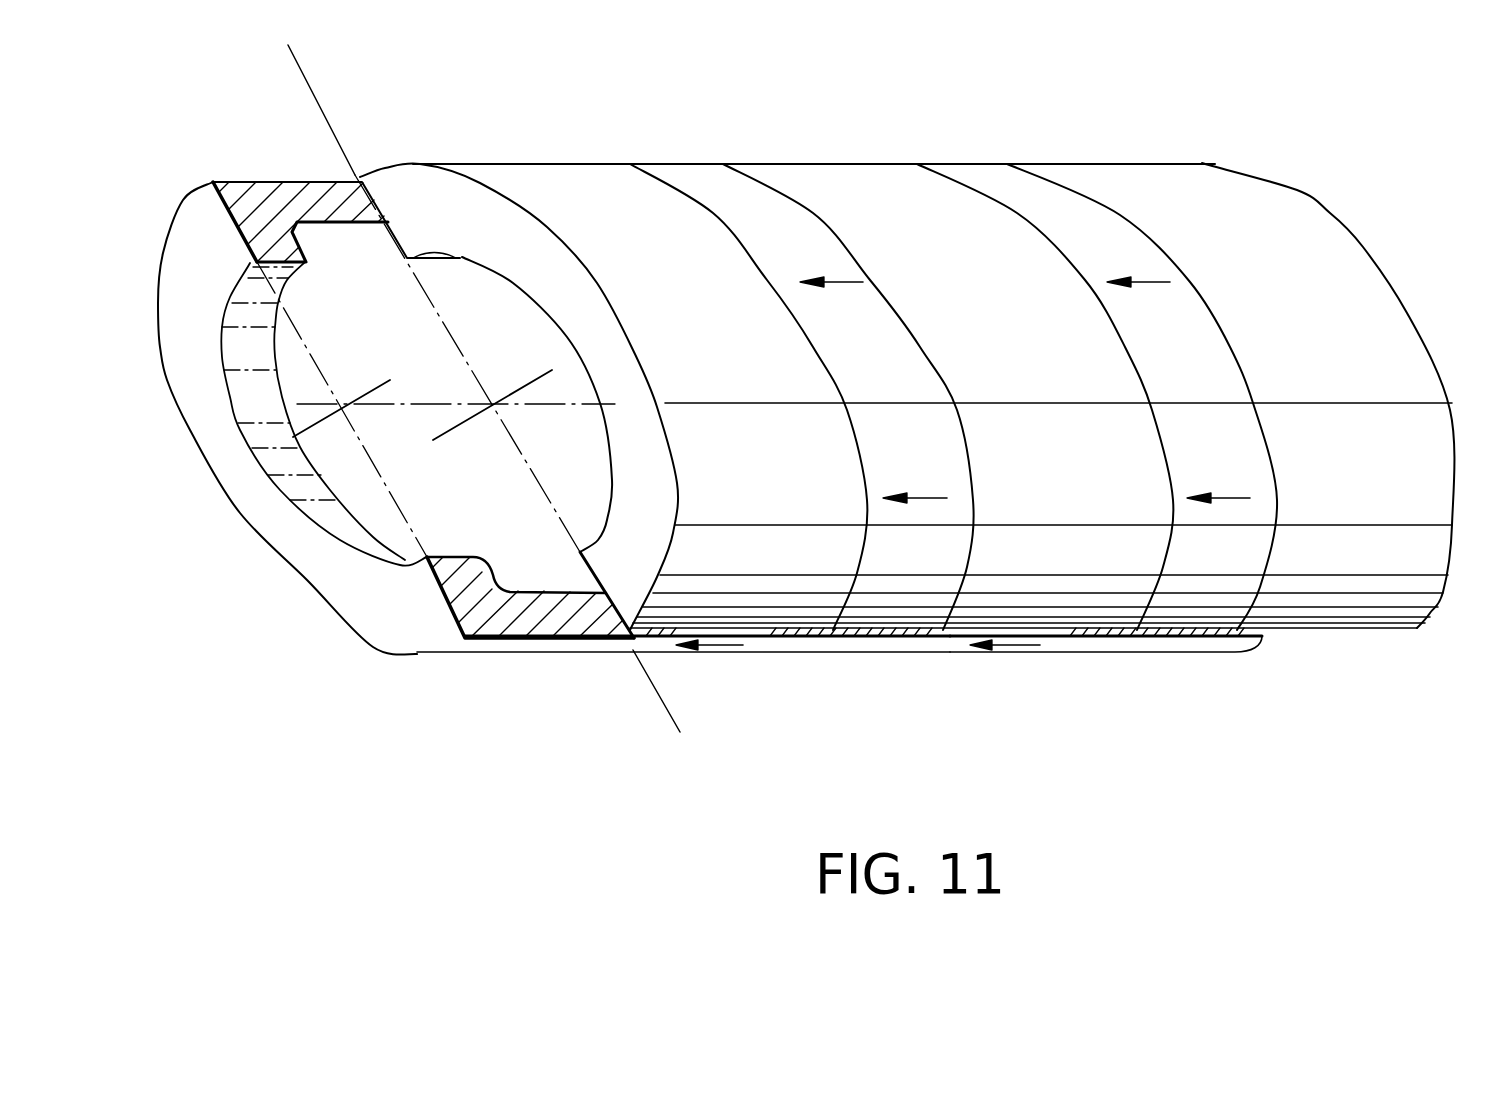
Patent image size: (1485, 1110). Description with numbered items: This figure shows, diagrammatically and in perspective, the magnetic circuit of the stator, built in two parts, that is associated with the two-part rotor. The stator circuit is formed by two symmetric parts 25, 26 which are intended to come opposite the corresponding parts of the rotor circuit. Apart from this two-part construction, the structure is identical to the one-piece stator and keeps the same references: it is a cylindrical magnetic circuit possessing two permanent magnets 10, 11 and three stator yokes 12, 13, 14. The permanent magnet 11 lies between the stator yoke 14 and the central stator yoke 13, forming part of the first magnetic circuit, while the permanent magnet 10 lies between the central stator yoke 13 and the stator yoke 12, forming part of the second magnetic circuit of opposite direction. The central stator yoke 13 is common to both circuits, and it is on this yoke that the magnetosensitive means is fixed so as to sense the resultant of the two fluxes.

The permanent magnet 10 is at (718, 638).
The permanent magnet 11 is at (1177, 607).
The stator yoke 12 is at (603, 195).
The stator yoke 13 is at (867, 192).
The stator yoke 14 is at (1145, 187).
The symmetric part 25 is at (402, 135).
The symmetric part 26 is at (183, 175).